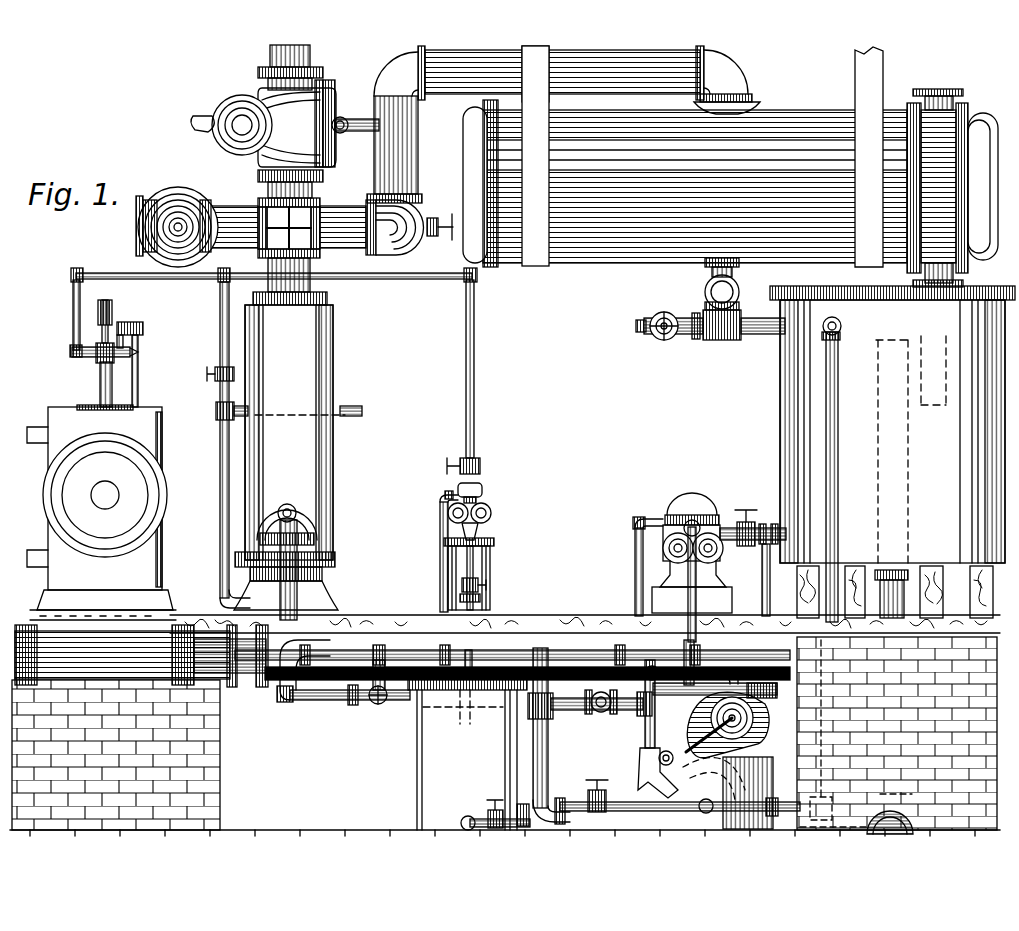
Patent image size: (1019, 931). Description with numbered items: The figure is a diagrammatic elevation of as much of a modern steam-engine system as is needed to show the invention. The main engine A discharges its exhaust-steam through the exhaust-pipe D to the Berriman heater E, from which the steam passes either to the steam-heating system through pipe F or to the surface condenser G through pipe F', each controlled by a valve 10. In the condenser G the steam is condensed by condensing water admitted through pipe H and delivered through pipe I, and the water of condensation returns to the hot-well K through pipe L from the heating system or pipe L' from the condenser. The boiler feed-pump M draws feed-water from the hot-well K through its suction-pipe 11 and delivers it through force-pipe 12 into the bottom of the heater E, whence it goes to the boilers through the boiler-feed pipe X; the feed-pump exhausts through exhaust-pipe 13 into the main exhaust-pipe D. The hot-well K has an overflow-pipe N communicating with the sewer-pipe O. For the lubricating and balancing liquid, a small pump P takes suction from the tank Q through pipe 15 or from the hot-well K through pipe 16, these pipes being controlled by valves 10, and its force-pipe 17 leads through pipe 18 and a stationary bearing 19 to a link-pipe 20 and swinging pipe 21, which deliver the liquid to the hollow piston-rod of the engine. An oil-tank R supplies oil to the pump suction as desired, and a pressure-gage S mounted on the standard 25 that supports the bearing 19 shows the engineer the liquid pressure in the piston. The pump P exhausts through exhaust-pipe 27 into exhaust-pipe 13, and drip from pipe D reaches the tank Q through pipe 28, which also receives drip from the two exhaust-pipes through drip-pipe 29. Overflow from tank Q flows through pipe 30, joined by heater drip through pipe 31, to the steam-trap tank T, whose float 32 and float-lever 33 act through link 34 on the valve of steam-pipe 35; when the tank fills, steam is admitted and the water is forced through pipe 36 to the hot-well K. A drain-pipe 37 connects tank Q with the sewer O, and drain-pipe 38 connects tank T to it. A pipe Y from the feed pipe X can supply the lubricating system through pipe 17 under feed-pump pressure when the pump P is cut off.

The main engine A is at (100, 508).
The exhaust-pipe D is at (141, 666).
The Berriman heater E is at (286, 456).
The pipe F is at (294, 236).
The pipe F' is at (563, 124).
The surface condenser G is at (730, 159).
The pipe H is at (944, 98).
The pipe I is at (962, 268).
The hot-well K is at (892, 452).
The pipe L is at (702, 343).
The pipe L' is at (700, 299).
The boiler feed-pump M is at (702, 558).
The overflow-pipe N is at (878, 484).
The sewer-pipe O is at (906, 822).
The pump P is at (478, 492).
The tank Q is at (467, 754).
The oil-tank R is at (490, 546).
The pressure-gage S is at (112, 298).
The steam-trap tank T is at (674, 728).
The pipe X is at (210, 490).
The pipe Y is at (220, 328).
The valves 10 is at (142, 240).
The pipe 11 is at (740, 522).
The force-pipe 12 is at (712, 568).
The exhaust-pipe 13 is at (635, 548).
The pipe 15 is at (462, 722).
The pipe 16 is at (750, 646).
The force-pipe 17 is at (424, 280).
The pipe 18 is at (73, 320).
The stationary bearing 19 is at (98, 360).
The link-pipe 20 is at (130, 322).
The swinging pipe 21 is at (138, 368).
The standard 25 is at (100, 390).
The exhaust-pipe 27 is at (440, 524).
The pipe 28 is at (343, 682).
The drip-pipe 29 is at (386, 702).
The pipe 30 is at (548, 770).
The pipe 31 is at (411, 632).
The float 32 is at (760, 720).
The float-lever 33 is at (712, 779).
The link 34 is at (647, 740).
The steam-pipe 35 is at (660, 668).
The pipe 36 is at (846, 420).
The drain-pipe 37 is at (545, 814).
The drain-pipe 38 is at (612, 806).